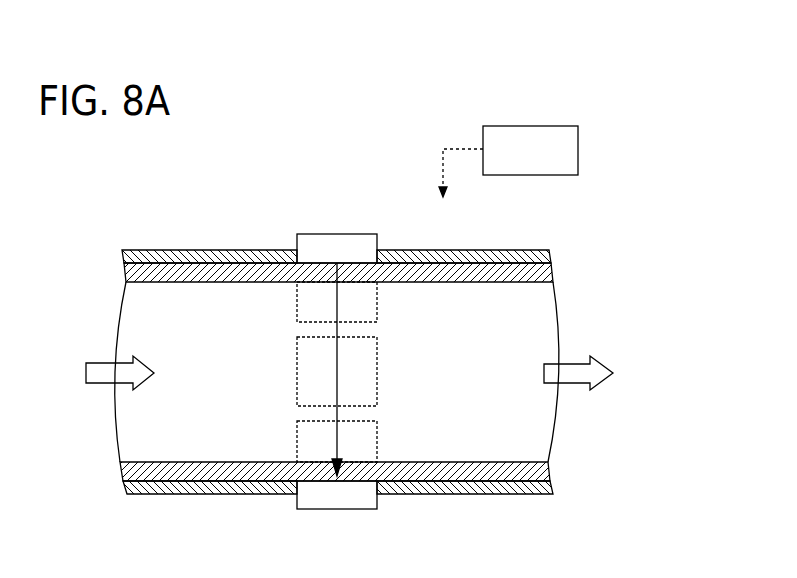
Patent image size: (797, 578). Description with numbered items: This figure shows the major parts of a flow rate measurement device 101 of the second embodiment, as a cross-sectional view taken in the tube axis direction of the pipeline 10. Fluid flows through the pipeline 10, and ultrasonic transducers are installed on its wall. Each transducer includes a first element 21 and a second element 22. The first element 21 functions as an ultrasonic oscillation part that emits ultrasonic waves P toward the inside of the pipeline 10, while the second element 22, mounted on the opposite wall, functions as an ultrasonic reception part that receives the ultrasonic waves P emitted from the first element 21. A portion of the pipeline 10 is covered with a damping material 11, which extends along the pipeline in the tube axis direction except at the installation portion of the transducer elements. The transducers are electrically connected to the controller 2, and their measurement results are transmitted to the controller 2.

The flow rate measurement device 101 is at (679, 136).
The damping material 11 is at (520, 250).
The pipeline 10 is at (214, 267).
The first element 21 is at (368, 245).
The second element 22 is at (297, 501).
The controller 2 is at (520, 138).
The ultrasonic waves P is at (337, 371).